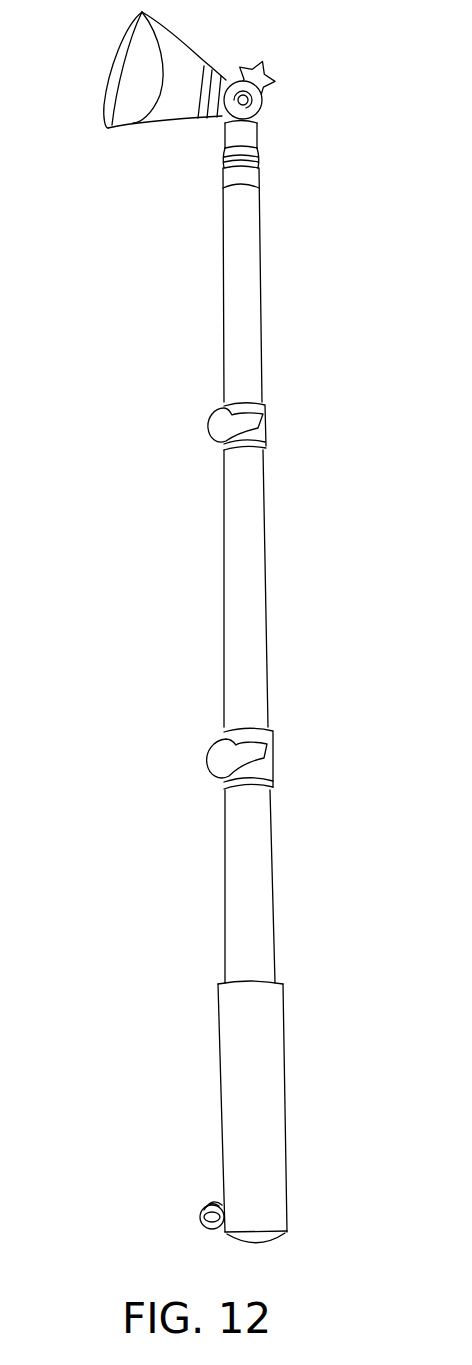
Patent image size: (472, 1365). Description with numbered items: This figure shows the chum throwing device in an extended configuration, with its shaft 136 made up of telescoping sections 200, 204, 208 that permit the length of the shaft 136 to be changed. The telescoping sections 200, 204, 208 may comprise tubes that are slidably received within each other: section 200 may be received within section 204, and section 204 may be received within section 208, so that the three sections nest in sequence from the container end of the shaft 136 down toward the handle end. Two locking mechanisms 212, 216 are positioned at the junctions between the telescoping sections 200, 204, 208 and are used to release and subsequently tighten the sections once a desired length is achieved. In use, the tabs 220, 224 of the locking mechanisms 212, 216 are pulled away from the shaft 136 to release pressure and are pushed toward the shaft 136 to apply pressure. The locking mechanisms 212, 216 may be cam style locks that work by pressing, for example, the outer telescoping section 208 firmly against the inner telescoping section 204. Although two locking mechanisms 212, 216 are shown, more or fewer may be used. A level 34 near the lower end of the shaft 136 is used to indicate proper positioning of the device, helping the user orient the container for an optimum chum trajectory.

The telescoping section 200 is at (292, 303).
The telescoping section 204 is at (292, 568).
The telescoping section 208 is at (295, 867).
The locking mechanism 212 is at (212, 423).
The tab 220 is at (227, 443).
The tab 224 is at (212, 757).
The locking mechanism 216 is at (225, 778).
The shaft 136 is at (115, 1003).
The level 34 is at (181, 1210).